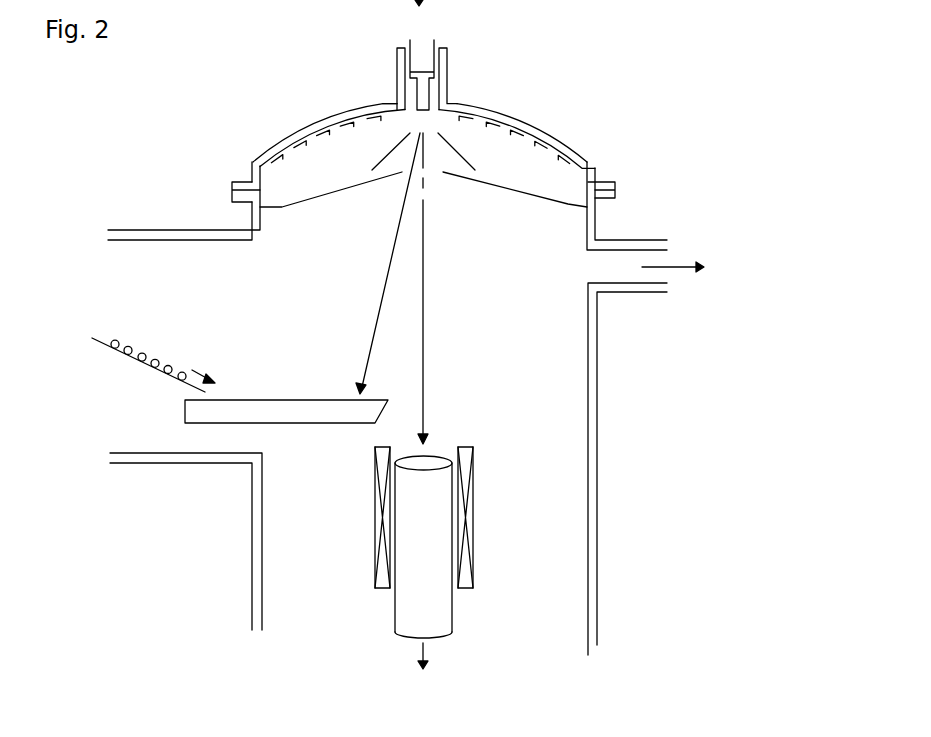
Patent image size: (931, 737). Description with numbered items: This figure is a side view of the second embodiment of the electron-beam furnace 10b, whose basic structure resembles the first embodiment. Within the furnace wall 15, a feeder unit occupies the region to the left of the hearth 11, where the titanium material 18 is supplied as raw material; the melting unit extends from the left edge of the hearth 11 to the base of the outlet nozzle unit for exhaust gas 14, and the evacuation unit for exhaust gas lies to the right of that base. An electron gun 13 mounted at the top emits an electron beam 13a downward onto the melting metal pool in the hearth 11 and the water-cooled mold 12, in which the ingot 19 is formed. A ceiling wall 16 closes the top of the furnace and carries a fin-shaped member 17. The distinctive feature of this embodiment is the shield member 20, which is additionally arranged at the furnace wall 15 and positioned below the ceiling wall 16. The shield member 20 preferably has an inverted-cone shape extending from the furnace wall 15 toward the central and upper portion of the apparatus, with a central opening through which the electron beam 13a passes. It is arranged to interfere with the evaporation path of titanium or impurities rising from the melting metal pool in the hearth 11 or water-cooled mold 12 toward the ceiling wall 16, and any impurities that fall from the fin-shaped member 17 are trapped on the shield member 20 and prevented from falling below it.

The electron-beam furnace 10b is at (591, 116).
The hearth 11 is at (312, 418).
The water-cooled mold 12 is at (473, 507).
The electron gun 13 is at (424, 63).
The electron beam 13a is at (390, 270).
The outlet nozzle unit for exhaust gas 14 is at (605, 250).
The furnace wall 15 is at (260, 221).
The ceiling wall 16 is at (402, 110).
The fin-shaped member 17 is at (505, 126).
The titanium material 18 is at (119, 340).
The ingot 19 is at (423, 547).
The shield member 20 is at (548, 200).